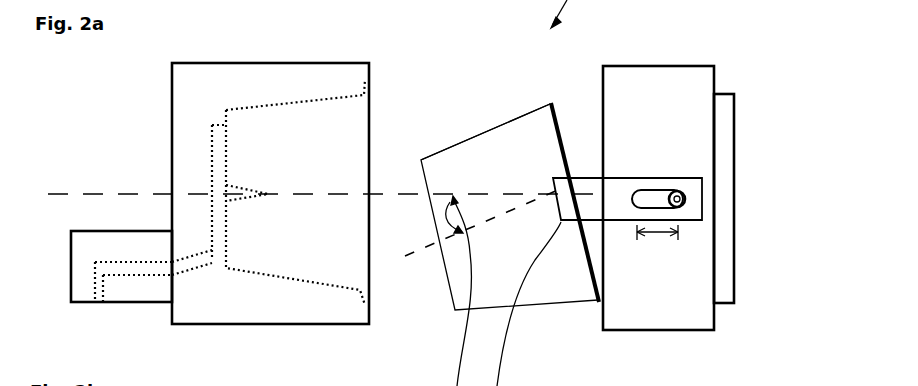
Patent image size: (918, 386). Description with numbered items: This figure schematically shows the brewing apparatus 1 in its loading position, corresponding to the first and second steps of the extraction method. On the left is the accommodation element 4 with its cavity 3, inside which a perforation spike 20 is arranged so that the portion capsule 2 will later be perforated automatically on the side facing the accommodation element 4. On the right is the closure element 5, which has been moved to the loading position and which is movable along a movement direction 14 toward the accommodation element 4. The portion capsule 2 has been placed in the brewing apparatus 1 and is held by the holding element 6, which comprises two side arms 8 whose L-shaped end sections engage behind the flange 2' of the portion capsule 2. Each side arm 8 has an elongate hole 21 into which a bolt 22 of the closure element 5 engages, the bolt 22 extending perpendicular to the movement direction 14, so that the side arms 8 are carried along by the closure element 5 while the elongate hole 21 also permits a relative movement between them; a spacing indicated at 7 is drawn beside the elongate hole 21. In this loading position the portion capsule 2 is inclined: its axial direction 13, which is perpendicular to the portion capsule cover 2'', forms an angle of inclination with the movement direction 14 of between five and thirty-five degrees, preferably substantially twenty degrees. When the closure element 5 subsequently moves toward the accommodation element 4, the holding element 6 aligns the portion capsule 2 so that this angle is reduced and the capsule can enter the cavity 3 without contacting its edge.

The brewing apparatus 1 is at (634, 38).
The portion capsule 2 is at (510, 182).
The flange 2' is at (575, 178).
The portion capsule cover 2'' is at (489, 107).
The cavity 3 is at (289, 105).
The accommodation element 4 is at (210, 78).
The closure element 5 is at (688, 82).
The holding element 6 is at (618, 207).
The distance 7 is at (662, 238).
The side arms 8 is at (627, 282).
The axial direction 13 is at (425, 250).
The movement direction 14 is at (137, 192).
The perforation spike 20 is at (243, 197).
The elongate hole 21 is at (650, 192).
The bolt 22 is at (685, 202).